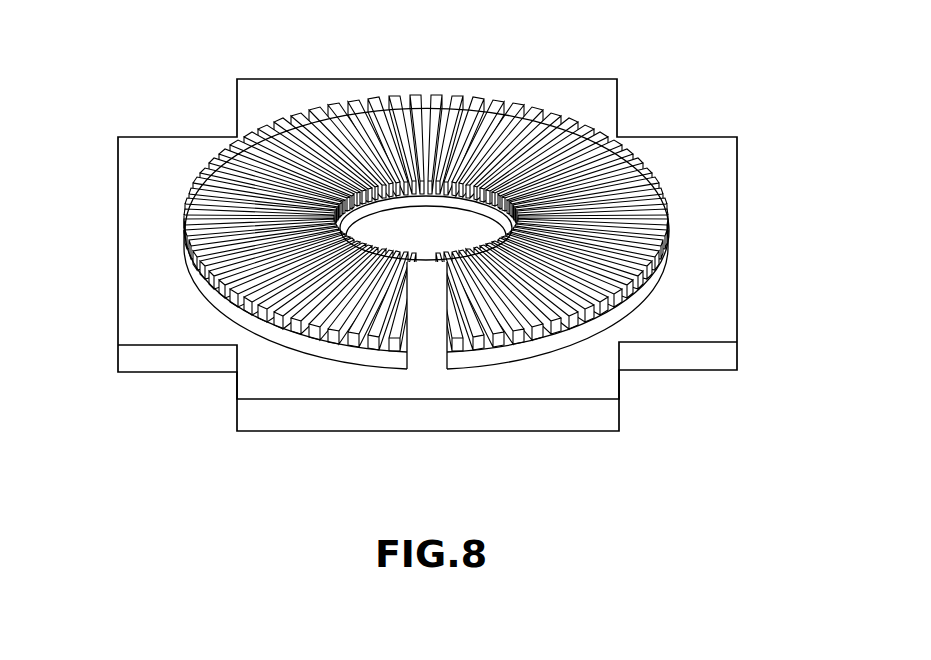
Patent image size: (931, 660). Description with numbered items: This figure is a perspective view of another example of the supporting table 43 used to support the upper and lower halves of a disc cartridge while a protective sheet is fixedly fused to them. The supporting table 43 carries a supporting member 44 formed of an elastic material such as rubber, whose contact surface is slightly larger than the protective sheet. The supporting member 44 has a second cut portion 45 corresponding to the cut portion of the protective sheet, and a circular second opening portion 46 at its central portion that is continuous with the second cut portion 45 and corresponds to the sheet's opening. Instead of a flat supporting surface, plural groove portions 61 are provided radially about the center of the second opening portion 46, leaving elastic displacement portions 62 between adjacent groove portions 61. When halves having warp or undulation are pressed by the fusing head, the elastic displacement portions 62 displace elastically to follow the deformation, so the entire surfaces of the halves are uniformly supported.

The supporting table 43 is at (277, 415).
The supporting member 44 is at (302, 118).
The second cut portion 45 is at (413, 362).
The second opening portion 46 is at (442, 200).
The groove portion 61 is at (207, 295).
The elastic displacement portion 62 is at (232, 282).